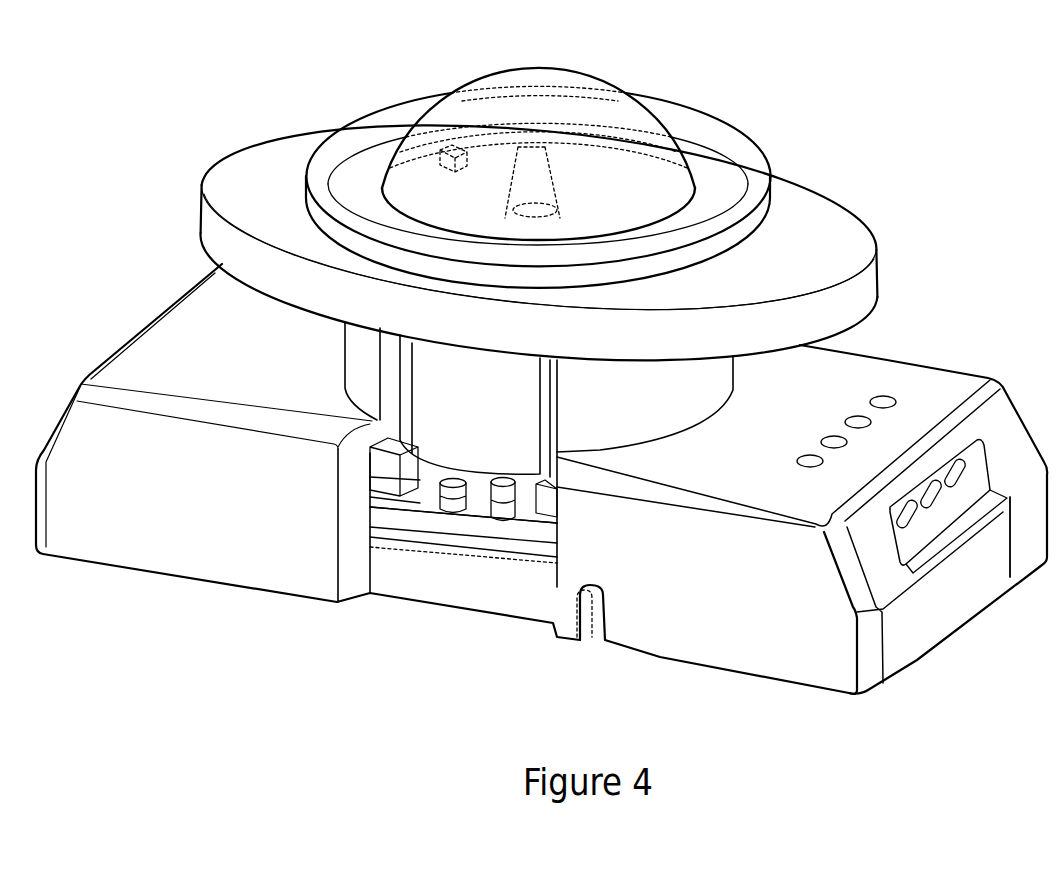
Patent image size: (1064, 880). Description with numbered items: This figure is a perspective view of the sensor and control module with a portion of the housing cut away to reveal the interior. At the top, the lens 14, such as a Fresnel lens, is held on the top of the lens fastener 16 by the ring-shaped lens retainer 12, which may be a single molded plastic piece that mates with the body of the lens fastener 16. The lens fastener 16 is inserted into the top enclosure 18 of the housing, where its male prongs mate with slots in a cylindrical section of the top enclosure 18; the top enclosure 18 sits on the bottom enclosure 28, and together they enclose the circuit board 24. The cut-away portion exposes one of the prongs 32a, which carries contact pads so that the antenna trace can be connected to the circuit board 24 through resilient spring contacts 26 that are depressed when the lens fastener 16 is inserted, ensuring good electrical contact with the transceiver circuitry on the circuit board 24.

The lens retainer 12 is at (697, 107).
The lens 14 is at (610, 82).
The lens fastener 16 is at (835, 202).
The top enclosure 18 is at (942, 365).
The circuit board 24 is at (427, 530).
The resilient spring contacts 26 is at (500, 523).
The bottom enclosure 28 is at (983, 610).
The male prong 32a is at (430, 457).